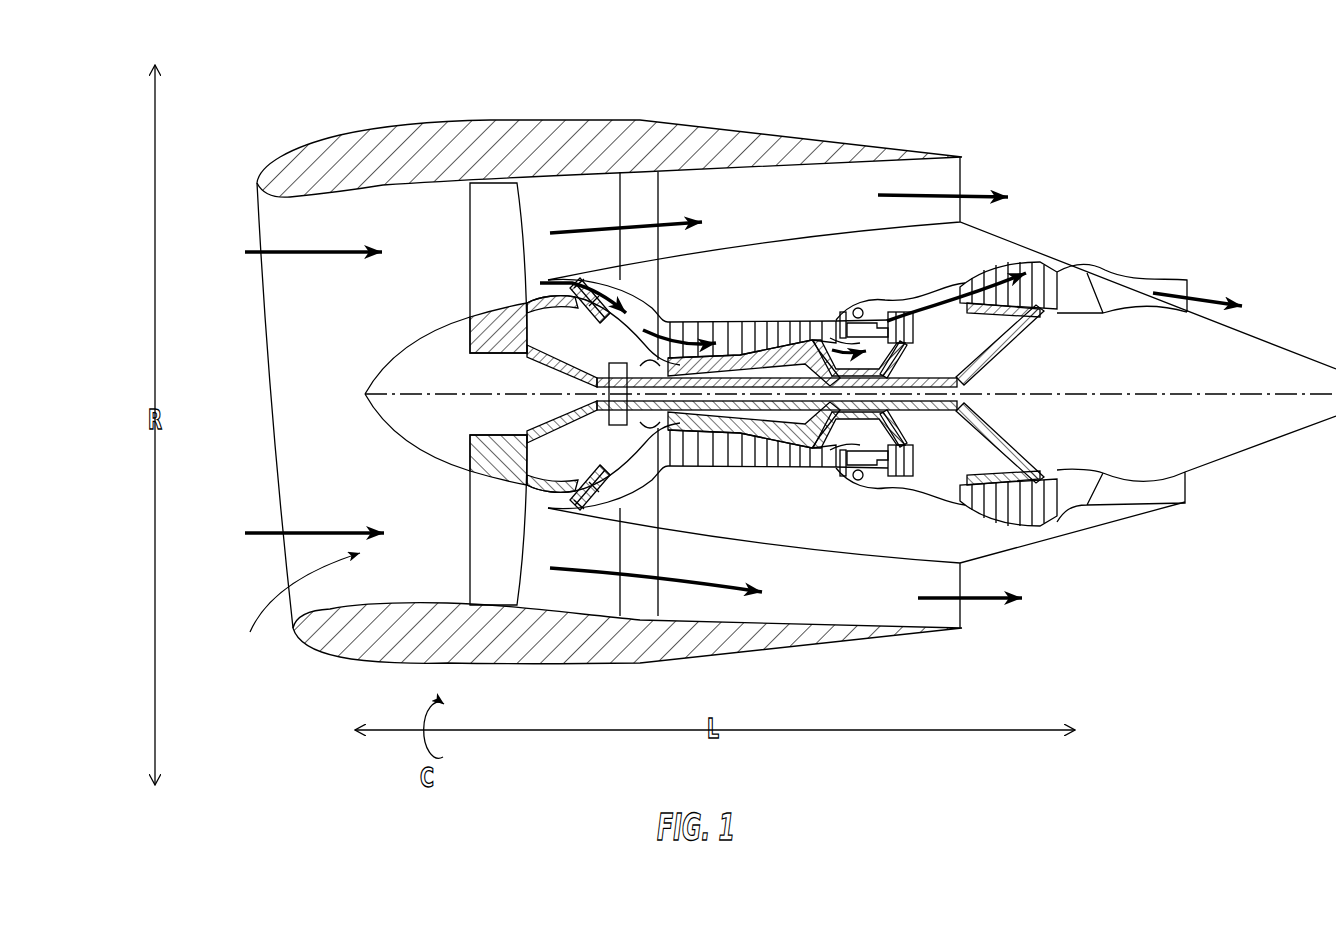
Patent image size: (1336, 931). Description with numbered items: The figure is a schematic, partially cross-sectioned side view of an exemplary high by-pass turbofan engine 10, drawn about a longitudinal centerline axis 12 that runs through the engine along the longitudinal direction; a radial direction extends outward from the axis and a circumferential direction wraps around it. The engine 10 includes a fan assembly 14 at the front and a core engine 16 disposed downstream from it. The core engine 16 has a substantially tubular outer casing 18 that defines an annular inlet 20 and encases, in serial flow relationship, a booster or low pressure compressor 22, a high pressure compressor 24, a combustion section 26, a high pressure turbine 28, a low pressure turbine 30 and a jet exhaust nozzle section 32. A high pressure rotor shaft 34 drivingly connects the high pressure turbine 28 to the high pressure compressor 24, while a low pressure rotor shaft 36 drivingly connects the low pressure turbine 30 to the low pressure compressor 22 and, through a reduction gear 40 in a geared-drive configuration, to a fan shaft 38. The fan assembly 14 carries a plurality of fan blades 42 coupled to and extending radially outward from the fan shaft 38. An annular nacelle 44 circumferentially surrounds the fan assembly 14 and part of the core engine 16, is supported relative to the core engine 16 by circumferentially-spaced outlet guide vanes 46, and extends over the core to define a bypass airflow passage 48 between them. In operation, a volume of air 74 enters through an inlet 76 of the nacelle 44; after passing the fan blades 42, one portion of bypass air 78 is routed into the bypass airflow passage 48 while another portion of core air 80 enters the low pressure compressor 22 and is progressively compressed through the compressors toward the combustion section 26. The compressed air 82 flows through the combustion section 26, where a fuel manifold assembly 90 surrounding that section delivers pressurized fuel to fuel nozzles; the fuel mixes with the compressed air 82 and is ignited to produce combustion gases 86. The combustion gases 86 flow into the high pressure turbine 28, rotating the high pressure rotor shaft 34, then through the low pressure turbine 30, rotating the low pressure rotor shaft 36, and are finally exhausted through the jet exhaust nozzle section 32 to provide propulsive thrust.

The turbofan engine 10 is at (1103, 143).
The longitudinal centerline axis 12 is at (1123, 392).
The fan assembly 14 is at (545, 196).
The core engine 16 is at (851, 216).
The outer casing 18 is at (814, 558).
The annular inlet 20 is at (560, 497).
The low pressure compressor 22 is at (617, 462).
The high pressure compressor 24 is at (688, 450).
The combustion section 26 is at (862, 452).
The high pressure turbine 28 is at (912, 462).
The low pressure turbine 30 is at (1044, 533).
The jet exhaust nozzle section 32 is at (1106, 507).
The high pressure rotor shaft 34 is at (905, 363).
The low pressure rotor shaft 36 is at (1000, 345).
The fan shaft 38 is at (515, 360).
The reduction gear 40 is at (611, 358).
The fan blades 42 is at (486, 222).
The nacelle 44 is at (472, 121).
The outlet guide vanes 46 is at (645, 200).
The bypass airflow passage 48 is at (757, 219).
The air 74 is at (290, 250).
The inlet 76 is at (295, 603).
The bypass air 78 is at (606, 222).
The core air 80 is at (554, 282).
The compressed air 82 is at (668, 330).
The combustion gases 86 is at (905, 320).
The fuel manifold assembly 90 is at (855, 307).